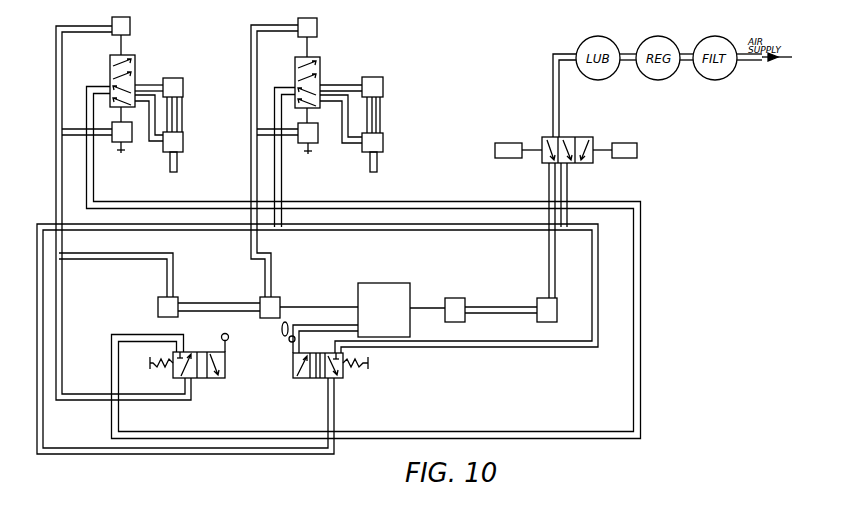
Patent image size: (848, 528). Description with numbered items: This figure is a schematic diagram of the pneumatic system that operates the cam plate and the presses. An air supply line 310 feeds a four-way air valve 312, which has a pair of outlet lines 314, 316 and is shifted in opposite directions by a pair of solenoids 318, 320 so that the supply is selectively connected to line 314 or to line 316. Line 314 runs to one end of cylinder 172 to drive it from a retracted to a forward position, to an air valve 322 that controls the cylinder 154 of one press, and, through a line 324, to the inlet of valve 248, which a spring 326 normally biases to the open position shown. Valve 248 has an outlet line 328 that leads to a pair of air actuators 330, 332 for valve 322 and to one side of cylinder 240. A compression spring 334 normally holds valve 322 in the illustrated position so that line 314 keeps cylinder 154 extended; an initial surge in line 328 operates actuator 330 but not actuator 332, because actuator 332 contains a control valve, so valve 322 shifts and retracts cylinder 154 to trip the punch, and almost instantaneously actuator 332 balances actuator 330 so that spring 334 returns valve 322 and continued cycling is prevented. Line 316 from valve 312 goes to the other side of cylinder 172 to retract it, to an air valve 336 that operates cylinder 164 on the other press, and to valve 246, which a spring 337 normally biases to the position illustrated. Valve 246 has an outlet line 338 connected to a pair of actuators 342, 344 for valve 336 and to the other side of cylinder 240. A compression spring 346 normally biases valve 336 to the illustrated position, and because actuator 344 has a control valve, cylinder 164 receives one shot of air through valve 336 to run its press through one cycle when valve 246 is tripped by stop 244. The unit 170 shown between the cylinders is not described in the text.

The cylinder 154 is at (183, 121).
The cylinder 164 is at (383, 107).
The control unit 170 is at (388, 283).
The cylinder 172 is at (505, 306).
The cylinder 240 is at (158, 308).
The stop 244 is at (282, 329).
The valve 246 is at (343, 376).
The valve 248 is at (225, 365).
The air supply line 310 is at (553, 86).
The four-way air valve 312 is at (573, 137).
The outlet line 314 is at (548, 174).
The outlet line 316 is at (568, 170).
The solenoid 318 is at (524, 118).
The solenoid 320 is at (623, 143).
The air valve 322 is at (135, 60).
The line 324 is at (641, 284).
The spring 326 is at (160, 361).
The outlet line 328 is at (63, 330).
The air actuator 330 is at (130, 25).
The air actuator 332 is at (132, 134).
The compression spring 334 is at (121, 153).
The air valve 336 is at (320, 63).
The spring 337 is at (366, 355).
The outlet line 338 is at (335, 402).
The actuator 342 is at (317, 28).
The actuator 344 is at (318, 136).
The compression spring 346 is at (306, 155).